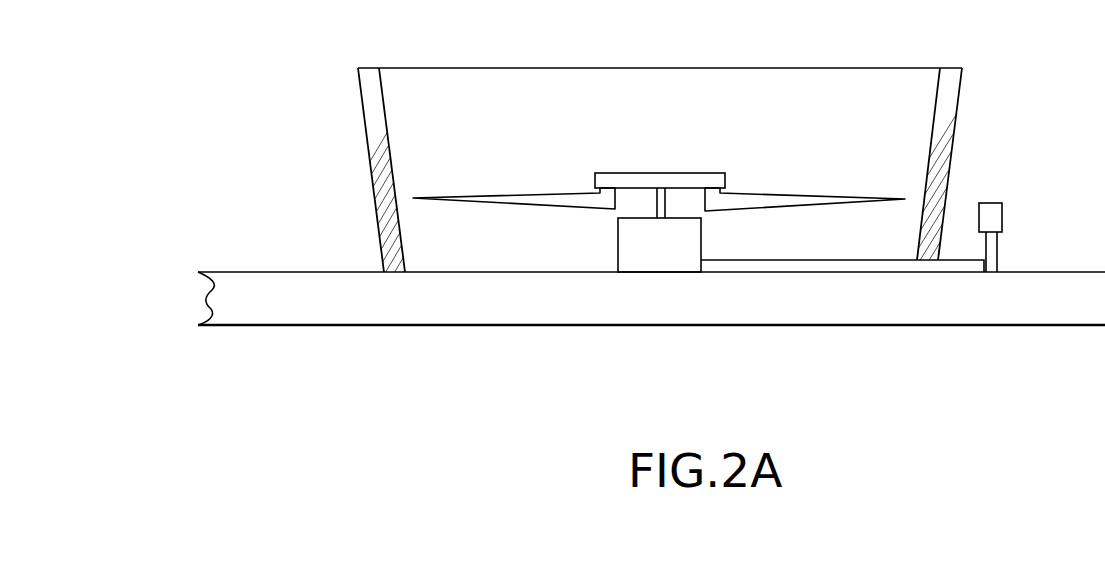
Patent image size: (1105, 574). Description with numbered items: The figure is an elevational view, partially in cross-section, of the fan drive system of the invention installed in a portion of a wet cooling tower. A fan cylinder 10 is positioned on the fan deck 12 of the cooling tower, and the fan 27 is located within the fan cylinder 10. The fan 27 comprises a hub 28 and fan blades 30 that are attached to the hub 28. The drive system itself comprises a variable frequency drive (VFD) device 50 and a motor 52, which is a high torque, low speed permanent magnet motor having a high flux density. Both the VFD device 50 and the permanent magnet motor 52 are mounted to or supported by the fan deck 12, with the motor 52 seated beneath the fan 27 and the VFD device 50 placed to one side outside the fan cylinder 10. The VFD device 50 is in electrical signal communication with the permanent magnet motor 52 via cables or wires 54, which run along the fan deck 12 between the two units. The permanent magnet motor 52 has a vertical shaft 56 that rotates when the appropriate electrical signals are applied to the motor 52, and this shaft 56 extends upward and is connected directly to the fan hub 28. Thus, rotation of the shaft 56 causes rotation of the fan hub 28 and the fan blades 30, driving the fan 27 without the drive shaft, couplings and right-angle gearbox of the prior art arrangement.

The fan cylinder 10 is at (958, 104).
The fan deck 12 is at (820, 312).
The fan 27 is at (648, 173).
The hub 28 is at (688, 175).
The fan blades 30 is at (493, 195).
The variable frequency drive (VFD) device 50 is at (1002, 210).
The permanent magnet motor 52 is at (618, 253).
The cables or wires 54 is at (822, 260).
The shaft 56 is at (656, 200).